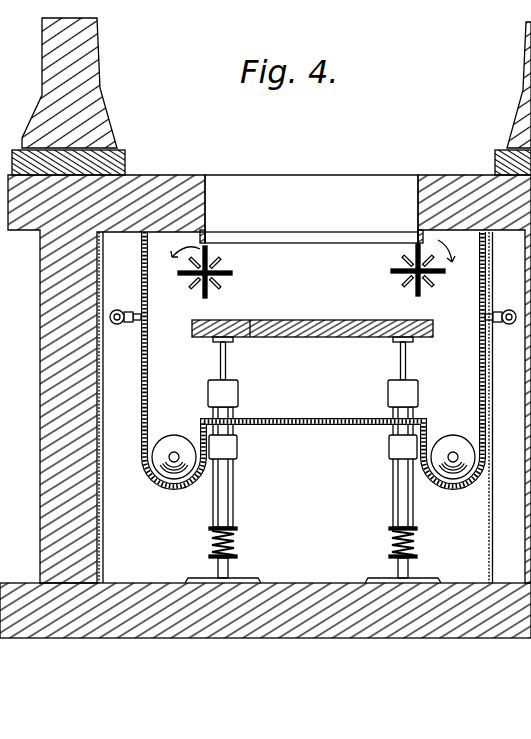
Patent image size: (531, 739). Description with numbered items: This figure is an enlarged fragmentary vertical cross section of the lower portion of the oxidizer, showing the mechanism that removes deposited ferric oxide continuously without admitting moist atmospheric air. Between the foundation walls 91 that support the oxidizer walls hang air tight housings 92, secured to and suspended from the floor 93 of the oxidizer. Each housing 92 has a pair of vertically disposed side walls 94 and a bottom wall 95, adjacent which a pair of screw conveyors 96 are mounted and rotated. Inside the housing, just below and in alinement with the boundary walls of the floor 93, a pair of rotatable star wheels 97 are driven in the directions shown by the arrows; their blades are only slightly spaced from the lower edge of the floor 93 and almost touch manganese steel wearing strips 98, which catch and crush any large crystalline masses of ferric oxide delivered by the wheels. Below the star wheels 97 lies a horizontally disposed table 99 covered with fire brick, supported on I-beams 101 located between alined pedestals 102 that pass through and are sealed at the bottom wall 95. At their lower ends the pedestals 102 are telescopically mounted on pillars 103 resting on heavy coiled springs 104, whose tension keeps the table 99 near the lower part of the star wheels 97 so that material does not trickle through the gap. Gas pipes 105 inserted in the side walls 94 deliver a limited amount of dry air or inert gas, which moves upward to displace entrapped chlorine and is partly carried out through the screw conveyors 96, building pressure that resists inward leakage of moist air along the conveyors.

The foundation walls 91 is at (100, 571).
The air tight housing 92 is at (329, 374).
The floor 93 is at (191, 176).
The side walls 94 is at (311, 374).
The bottom wall 95 is at (292, 426).
The screw conveyors 96 is at (173, 436).
The star wheels 97 is at (232, 275).
The wearing strips 98 is at (300, 239).
The table 99 is at (318, 322).
The I-beams 101 is at (226, 356).
The pedestals 102 is at (238, 398).
The pillars 103 is at (236, 501).
The coiled springs 104 is at (236, 551).
The gas pipes 105 is at (122, 310).